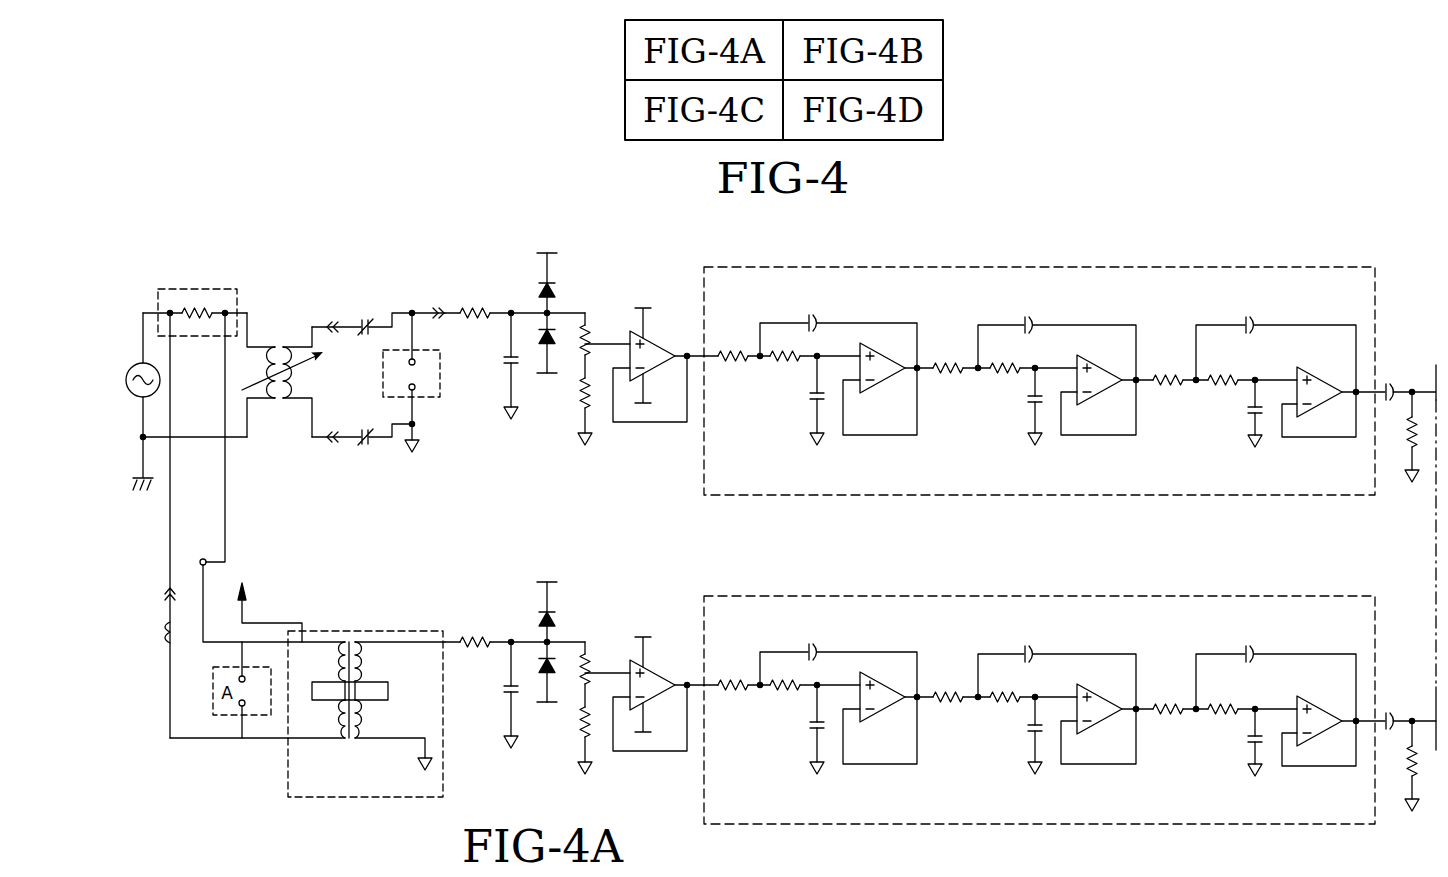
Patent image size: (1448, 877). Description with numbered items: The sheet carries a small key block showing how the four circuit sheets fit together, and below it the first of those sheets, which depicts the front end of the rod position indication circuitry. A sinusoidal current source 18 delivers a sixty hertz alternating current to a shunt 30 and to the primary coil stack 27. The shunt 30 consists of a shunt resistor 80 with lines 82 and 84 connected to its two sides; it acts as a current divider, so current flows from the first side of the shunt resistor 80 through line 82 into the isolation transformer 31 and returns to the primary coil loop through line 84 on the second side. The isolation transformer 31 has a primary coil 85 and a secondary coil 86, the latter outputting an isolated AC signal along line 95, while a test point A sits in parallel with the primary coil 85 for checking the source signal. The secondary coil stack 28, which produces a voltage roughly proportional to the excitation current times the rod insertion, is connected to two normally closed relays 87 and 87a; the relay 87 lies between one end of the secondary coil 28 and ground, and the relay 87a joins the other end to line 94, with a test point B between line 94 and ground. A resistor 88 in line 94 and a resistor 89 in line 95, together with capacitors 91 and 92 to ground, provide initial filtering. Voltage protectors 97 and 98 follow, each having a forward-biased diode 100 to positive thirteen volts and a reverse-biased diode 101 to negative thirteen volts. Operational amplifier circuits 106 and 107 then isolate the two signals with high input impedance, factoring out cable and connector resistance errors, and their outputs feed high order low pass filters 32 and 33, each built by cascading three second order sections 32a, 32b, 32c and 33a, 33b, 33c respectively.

The sinusoidal current source 18 is at (131, 363).
The shunt 30 is at (180, 283).
The shunt resistor 80 is at (199, 311).
The primary coil stack 27 is at (268, 346).
The secondary coil stack 28 is at (281, 400).
The normally closed relay 87a is at (340, 316).
The normally closed relay 87 is at (376, 371).
The line 94 is at (400, 311).
The resistor 88 is at (468, 309).
The voltage protector 97 is at (578, 258).
The forward-biased diode 100 is at (556, 290).
The reverse-biased diode 101 is at (542, 337).
The capacitor 91 is at (508, 365).
The operational amplifier circuit 106 is at (664, 325).
The low pass filter 32 is at (1044, 350).
The second order low pass filter section 32a is at (783, 406).
The second order low pass filter section 32b is at (999, 406).
The second order low pass filter section 32c is at (1216, 404).
The line 82 is at (168, 520).
The line 84 is at (226, 521).
The isolation transformer 31 is at (318, 723).
The primary coil 85 is at (341, 740).
The secondary coil 86 is at (358, 641).
The line 95 is at (412, 641).
The resistor 89 is at (515, 615).
The voltage protector 98 is at (591, 639).
The capacitor 92 is at (489, 693).
The operational amplifier circuit 107 is at (658, 667).
The low pass filter 33 is at (1044, 679).
The second order low pass filter section 33a is at (818, 723).
The second order low pass filter section 33b is at (1043, 724).
The second order low pass filter section 33c is at (1269, 725).